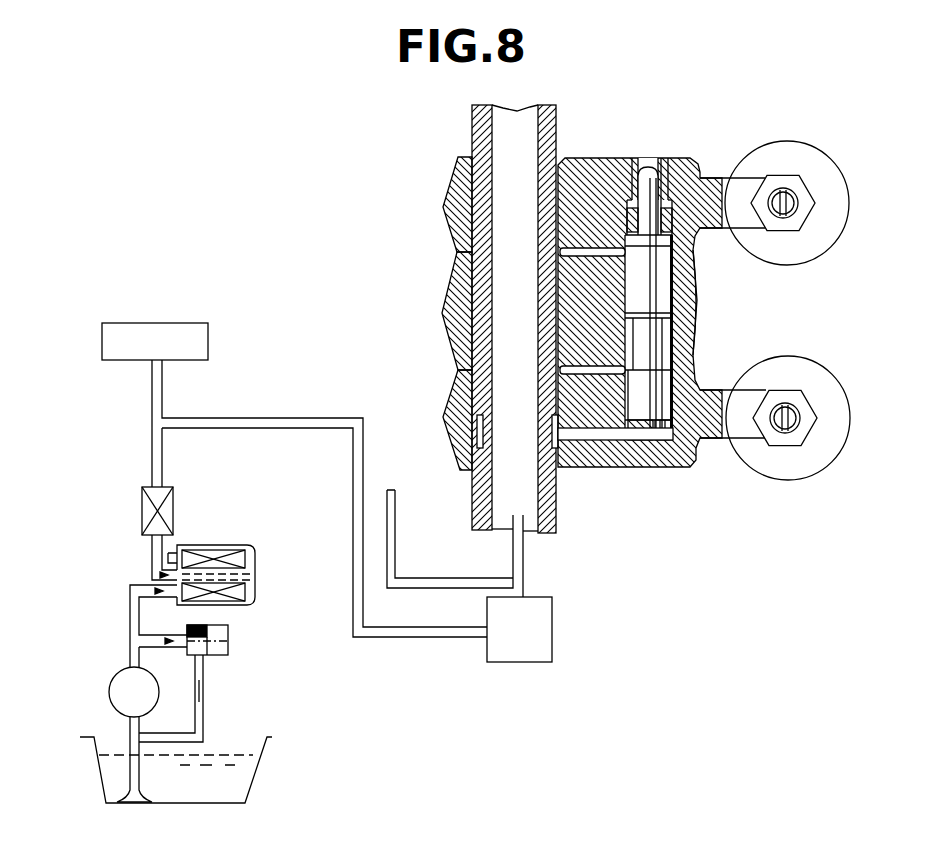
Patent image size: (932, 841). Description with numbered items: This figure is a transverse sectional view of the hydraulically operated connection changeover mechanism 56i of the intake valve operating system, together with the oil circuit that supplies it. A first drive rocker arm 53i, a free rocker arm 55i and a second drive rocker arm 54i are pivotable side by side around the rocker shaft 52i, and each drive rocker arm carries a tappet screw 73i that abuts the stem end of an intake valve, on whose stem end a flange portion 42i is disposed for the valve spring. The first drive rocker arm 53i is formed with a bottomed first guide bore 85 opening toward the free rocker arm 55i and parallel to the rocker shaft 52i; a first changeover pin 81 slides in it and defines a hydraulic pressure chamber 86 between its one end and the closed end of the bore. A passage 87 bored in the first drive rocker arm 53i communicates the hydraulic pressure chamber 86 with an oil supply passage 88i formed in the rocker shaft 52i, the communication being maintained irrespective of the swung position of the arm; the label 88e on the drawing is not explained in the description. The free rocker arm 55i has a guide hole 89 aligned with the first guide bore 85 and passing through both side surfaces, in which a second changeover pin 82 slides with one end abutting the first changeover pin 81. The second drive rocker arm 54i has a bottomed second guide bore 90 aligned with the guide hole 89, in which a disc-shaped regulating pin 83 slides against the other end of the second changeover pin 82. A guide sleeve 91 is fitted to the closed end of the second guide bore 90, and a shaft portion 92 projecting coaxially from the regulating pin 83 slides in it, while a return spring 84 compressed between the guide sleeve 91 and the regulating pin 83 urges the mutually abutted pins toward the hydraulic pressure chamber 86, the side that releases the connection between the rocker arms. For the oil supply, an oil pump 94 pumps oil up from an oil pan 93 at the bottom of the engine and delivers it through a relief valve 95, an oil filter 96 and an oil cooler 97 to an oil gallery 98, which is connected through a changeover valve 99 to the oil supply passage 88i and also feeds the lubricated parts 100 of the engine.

The flange portion 42i is at (853, 196).
The rocker shaft 52i is at (476, 507).
The first drive rocker arm 53i is at (458, 460).
The second drive rocker arm 54i is at (458, 172).
The free rocker arm 55i is at (454, 346).
The hydraulically operated connection changeover mechanism 56i is at (679, 291).
The tappet screw 73i is at (788, 192).
The first changeover pin 81 is at (680, 389).
The second changeover pin 82 is at (677, 270).
The regulating pin 83 is at (647, 246).
The return spring 84 is at (704, 178).
The first guide bore 85 is at (636, 389).
The hydraulic pressure chamber 86 is at (673, 441).
The passage 87 is at (610, 434).
The external electrode lead 88e is at (388, 508).
The oil supply passage 88i is at (557, 503).
The guide hole 89 is at (673, 328).
The second guide bore 90 is at (627, 216).
The guide sleeve 91 is at (663, 165).
The shaft portion 92 is at (656, 170).
The oil pan 93 is at (258, 768).
The oil pump 94 is at (116, 678).
The relief valve 95 is at (220, 626).
The oil filter 96 is at (255, 578).
The oil cooler 97 is at (171, 507).
The oil gallery 98 is at (152, 461).
The changeover valve 99 is at (527, 645).
The lubricated parts 100 is at (155, 341).